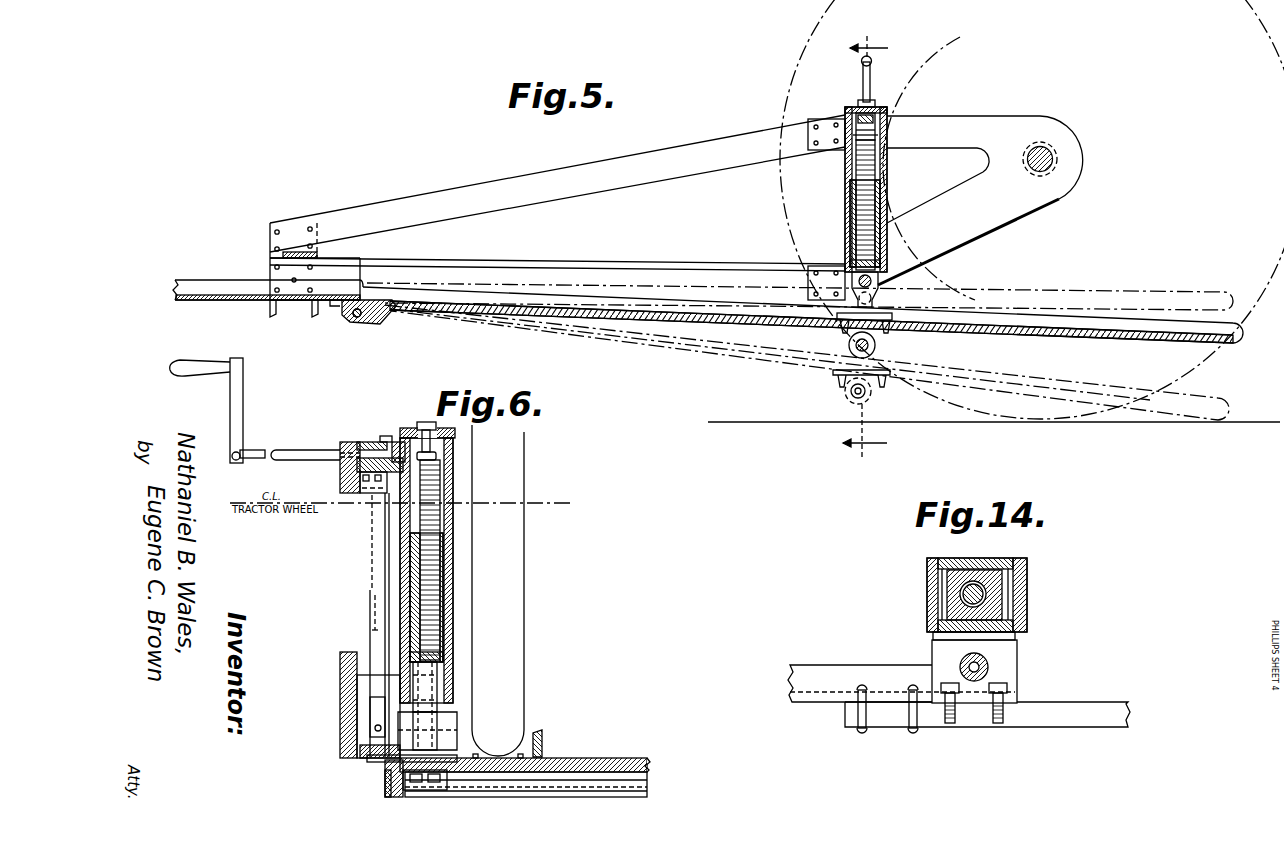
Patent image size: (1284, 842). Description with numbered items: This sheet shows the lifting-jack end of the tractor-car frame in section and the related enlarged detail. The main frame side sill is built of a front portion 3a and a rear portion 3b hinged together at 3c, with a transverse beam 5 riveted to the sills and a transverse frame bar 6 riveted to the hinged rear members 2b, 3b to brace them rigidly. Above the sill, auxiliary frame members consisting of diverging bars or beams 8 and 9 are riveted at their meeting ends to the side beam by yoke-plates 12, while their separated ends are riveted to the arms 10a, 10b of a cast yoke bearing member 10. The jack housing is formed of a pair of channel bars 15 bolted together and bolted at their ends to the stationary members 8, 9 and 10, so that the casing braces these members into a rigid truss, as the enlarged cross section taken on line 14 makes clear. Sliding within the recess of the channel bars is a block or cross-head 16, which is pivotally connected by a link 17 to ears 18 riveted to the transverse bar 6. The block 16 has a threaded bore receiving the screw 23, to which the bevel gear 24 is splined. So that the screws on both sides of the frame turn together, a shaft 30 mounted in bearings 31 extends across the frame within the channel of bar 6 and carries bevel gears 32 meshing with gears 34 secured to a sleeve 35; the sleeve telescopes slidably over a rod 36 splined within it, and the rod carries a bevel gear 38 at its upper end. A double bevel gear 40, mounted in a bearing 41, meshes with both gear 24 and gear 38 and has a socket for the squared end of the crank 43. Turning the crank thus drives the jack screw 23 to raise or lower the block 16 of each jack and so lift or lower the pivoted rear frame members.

In FIG. 6, the rear side sill portion 2b is at (543, 738).
In FIG. 5, the front side sill portion 3a is at (200, 287).
In FIG. 5, the rear side sill portion 3b is at (1128, 338).
In FIG. 5, the hinge 3c is at (351, 323).
In FIG. 5, the transverse beam 5 is at (283, 305).
In FIG. 5, the transverse frame bar 6 is at (777, 378).
In FIG. 6, the transverse frame bar 6 is at (618, 764).
In FIG. 5, the diverging beam 8 is at (666, 154).
In FIG. 6, the diverging beam 8 is at (363, 440).
In FIG. 5, the diverging beam 9 is at (683, 262).
In FIG. 6, the diverging beam 9 is at (362, 697).
In FIG. 14, the diverging beam 9 is at (805, 672).
In FIG. 5, the cast yoke bearing member 10 is at (1060, 128).
In FIG. 5, the yoke bearing arm 10a is at (936, 122).
In FIG. 6, the yoke bearing arm 10a is at (343, 466).
In FIG. 5, the yoke bearing arm 10b is at (963, 233).
In FIG. 6, the yoke bearing arm 10b is at (340, 667).
In FIG. 14, the yoke bearing arm 10b is at (1113, 719).
In FIG. 5, the yoke-plate 12 is at (303, 256).
In FIG. 6, the section line 14 is at (403, 570).
In FIG. 5, the channel bar 15 is at (887, 167).
In FIG. 6, the channel bar 15 is at (453, 490).
In FIG. 14, the channel bar 15 is at (933, 565).
In FIG. 5, the cross-head block 16 is at (850, 224).
In FIG. 6, the cross-head block 16 is at (452, 660).
In FIG. 14, the cross-head block 16 is at (1027, 571).
In FIG. 5, the link 17 is at (880, 296).
In FIG. 6, the link 17 is at (430, 716).
In FIG. 5, the ears 18 is at (872, 298).
In FIG. 6, the ears 18 is at (457, 718).
In FIG. 5, the jack screw 23 is at (850, 150).
In FIG. 6, the jack screw 23 is at (440, 517).
In FIG. 14, the jack screw 23 is at (985, 598).
In FIG. 5, the bevel gear 24 is at (875, 112).
In FIG. 6, the bevel gear 24 is at (525, 443).
In FIG. 5, the shaft 30 is at (876, 347).
In FIG. 6, the shaft 30 is at (650, 778).
In FIG. 6, the bearing 31 is at (402, 797).
In FIG. 5, the bevel gear 32 is at (873, 354).
In FIG. 6, the bevel gear 32 is at (385, 778).
In FIG. 5, the bevel gear 34 is at (850, 333).
In FIG. 6, the bevel gear 34 is at (367, 760).
In FIG. 6, the sleeve 35 is at (368, 602).
In FIG. 14, the sleeve 35 is at (988, 672).
In FIG. 6, the rod 36 is at (372, 620).
In FIG. 14, the rod 36 is at (988, 662).
In FIG. 6, the bevel gear 38 is at (342, 480).
In FIG. 6, the double bevel gear 40 is at (399, 442).
In FIG. 6, the bearing 41 is at (384, 436).
In FIG. 5, the crank 43 is at (860, 86).
In FIG. 6, the crank 43 is at (236, 432).